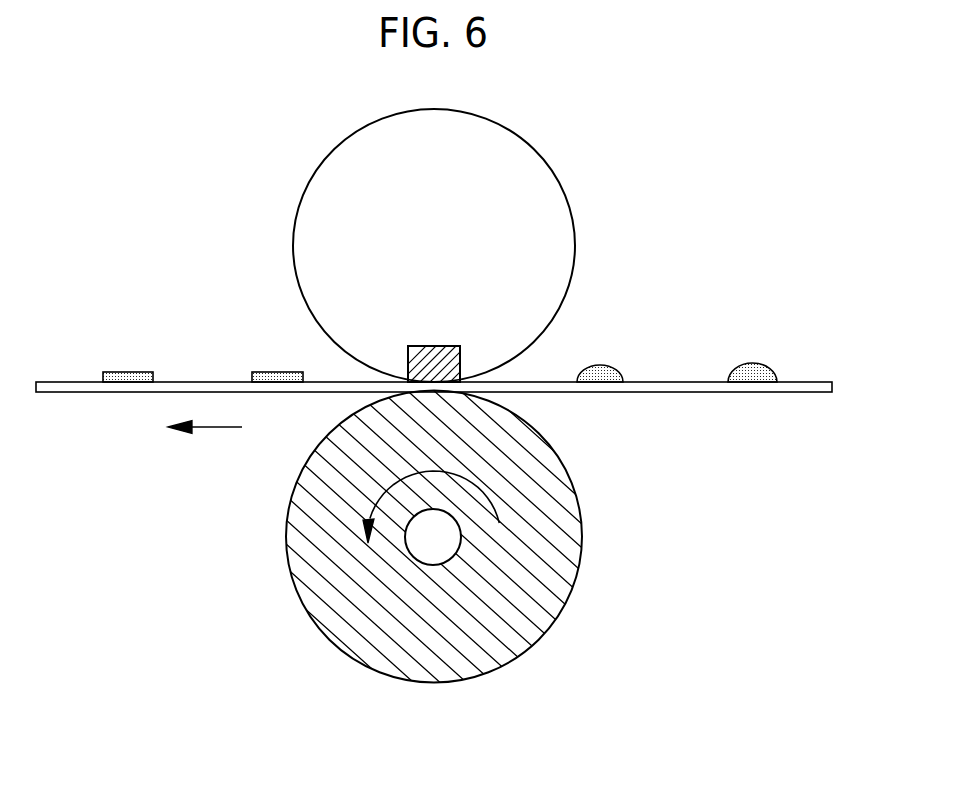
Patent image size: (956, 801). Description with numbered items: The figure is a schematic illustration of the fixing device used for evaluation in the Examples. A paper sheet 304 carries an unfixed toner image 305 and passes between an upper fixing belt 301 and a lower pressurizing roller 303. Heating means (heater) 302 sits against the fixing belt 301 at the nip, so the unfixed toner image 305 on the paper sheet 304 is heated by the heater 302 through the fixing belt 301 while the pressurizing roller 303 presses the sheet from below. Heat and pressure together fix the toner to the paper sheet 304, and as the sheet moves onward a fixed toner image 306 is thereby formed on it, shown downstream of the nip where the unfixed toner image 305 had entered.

The fixing belt 301 is at (517, 150).
The heating means (heater) 302 is at (433, 353).
The pressurizing roller 303 is at (546, 562).
The paper sheet 304 is at (686, 388).
The unfixed toner image 305 is at (757, 368).
The fixed toner image (fixed image) 306 is at (130, 370).